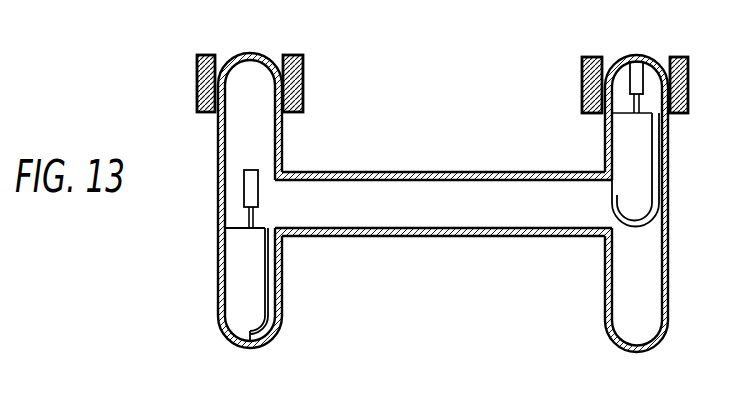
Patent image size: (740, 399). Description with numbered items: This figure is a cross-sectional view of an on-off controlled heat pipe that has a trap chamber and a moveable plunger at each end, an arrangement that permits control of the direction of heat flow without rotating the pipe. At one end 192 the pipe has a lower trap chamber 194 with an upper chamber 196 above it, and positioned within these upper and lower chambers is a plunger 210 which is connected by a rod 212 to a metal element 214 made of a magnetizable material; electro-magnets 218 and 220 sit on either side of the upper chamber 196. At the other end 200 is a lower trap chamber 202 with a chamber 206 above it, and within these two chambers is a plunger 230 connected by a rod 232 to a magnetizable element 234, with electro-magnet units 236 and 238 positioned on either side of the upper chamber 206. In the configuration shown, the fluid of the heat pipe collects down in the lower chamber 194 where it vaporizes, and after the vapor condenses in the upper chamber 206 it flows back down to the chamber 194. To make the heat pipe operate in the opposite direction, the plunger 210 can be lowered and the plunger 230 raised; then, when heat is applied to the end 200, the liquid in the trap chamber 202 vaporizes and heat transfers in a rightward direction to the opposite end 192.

The one end 192 is at (662, 203).
The lower trap chamber 194 is at (668, 296).
The upper chamber 196 is at (668, 130).
The other end 200 is at (218, 218).
The lower trap chamber 202 is at (218, 284).
The chamber 206 is at (218, 143).
The plunger 210 is at (643, 170).
The rod 212 is at (633, 102).
The metal element 214 is at (640, 60).
The electro-magnet 218 is at (688, 63).
The electro-magnet 220 is at (582, 61).
The plunger 230 is at (257, 295).
The rod 232 is at (254, 222).
The magnetizable element 234 is at (256, 180).
The electro-magnet unit 236 is at (197, 62).
The electro-magnet unit 238 is at (332, 52).